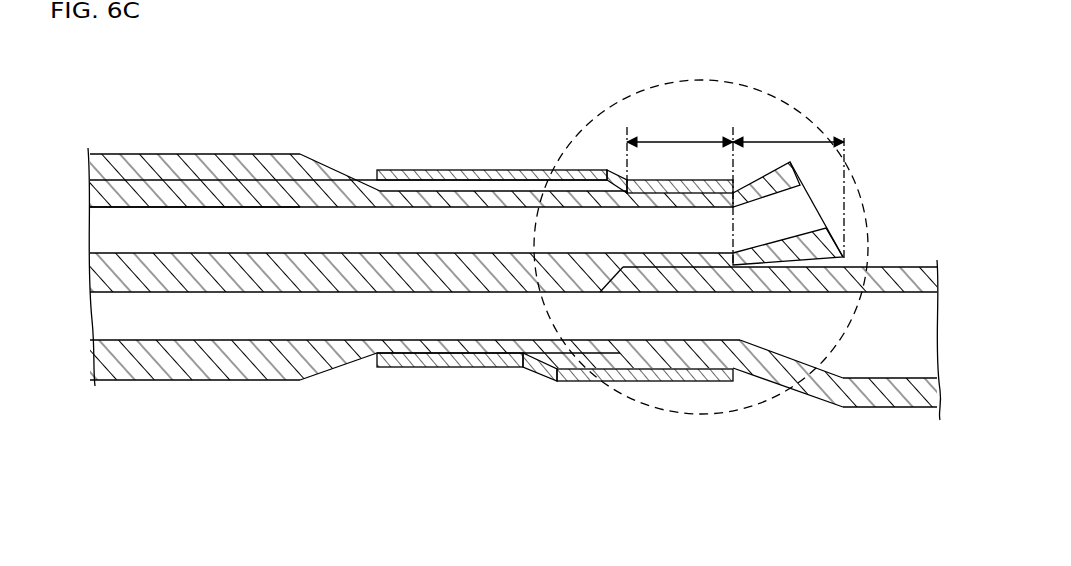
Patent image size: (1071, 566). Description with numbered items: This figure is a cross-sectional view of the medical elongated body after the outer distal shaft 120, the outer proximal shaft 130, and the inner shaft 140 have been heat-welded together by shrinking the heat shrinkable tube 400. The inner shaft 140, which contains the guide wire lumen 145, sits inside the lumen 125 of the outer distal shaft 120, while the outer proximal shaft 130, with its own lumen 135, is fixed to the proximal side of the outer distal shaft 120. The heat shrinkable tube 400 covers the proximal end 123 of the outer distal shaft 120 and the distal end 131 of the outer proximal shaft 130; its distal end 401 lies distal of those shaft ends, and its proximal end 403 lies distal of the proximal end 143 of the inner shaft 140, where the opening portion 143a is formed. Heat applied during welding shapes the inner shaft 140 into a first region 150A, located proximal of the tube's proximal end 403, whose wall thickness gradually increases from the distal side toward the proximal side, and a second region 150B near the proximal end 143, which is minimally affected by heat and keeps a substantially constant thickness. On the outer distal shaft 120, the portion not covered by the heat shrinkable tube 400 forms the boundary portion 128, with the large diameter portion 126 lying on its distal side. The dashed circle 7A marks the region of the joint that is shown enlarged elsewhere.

The outer distal shaft 120 is at (210, 360).
The proximal end of the outer distal shaft 123 is at (609, 176).
The lumen of the outer distal shaft 125 is at (147, 317).
The large diameter portion 126 is at (266, 155).
The boundary portion 128 is at (333, 168).
The outer proximal shaft 130 is at (882, 388).
The distal end of the outer proximal shaft 131 is at (547, 366).
The lumen of the outer proximal shaft 135 is at (817, 372).
The inner shaft 140 is at (200, 192).
The proximal end of the inner shaft 143 is at (793, 165).
The opening portion 143a is at (803, 200).
The guide wire lumen 145 is at (141, 212).
The first region 150A is at (680, 185).
The second region 150B is at (802, 132).
The heat shrinkable tube 400 is at (521, 148).
The distal end of the heat shrinkable tube 401 is at (382, 171).
The proximal end of the heat shrinkable tube 403 is at (718, 183).
The detail region 7A is at (680, 414).